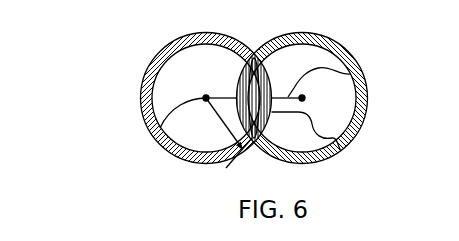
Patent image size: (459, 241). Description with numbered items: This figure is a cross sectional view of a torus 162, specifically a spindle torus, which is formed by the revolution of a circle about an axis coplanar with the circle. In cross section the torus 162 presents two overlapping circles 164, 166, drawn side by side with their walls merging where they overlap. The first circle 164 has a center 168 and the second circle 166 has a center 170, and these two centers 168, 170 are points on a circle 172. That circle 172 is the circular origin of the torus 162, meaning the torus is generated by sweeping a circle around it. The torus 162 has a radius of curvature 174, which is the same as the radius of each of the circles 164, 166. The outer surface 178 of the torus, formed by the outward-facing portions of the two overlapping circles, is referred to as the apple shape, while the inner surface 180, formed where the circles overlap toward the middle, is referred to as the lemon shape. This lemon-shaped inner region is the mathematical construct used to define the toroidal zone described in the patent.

The torus 162 is at (92, 68).
The circle 164 is at (141, 106).
The circle 166 is at (369, 103).
The center 168 is at (155, 140).
The center 170 is at (358, 133).
The circle 172 is at (351, 73).
The radius of curvature 174 is at (249, 138).
The outer surface 178 is at (224, 165).
The inner surface 180 is at (341, 151).